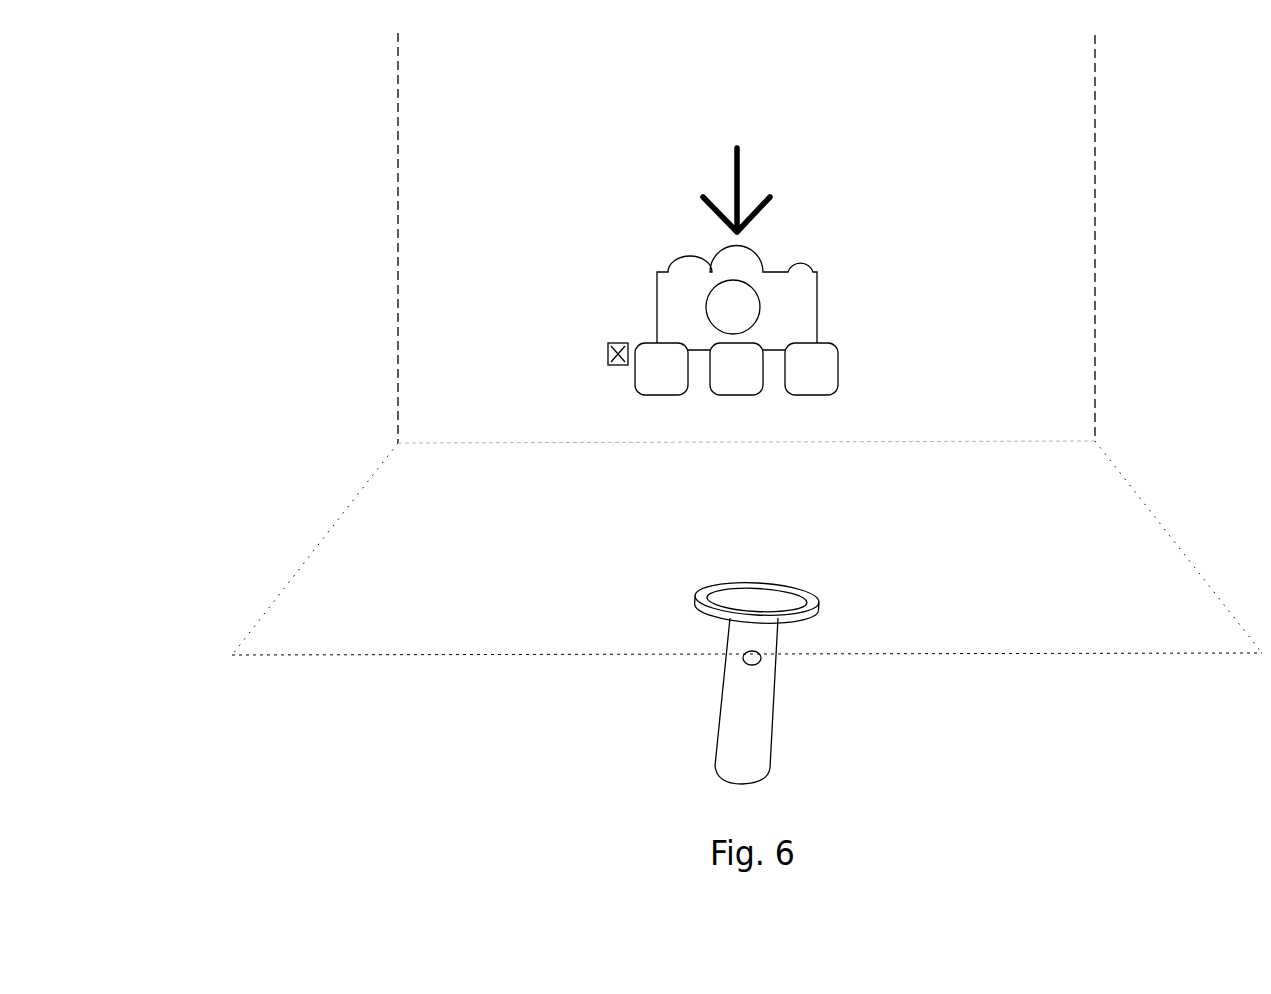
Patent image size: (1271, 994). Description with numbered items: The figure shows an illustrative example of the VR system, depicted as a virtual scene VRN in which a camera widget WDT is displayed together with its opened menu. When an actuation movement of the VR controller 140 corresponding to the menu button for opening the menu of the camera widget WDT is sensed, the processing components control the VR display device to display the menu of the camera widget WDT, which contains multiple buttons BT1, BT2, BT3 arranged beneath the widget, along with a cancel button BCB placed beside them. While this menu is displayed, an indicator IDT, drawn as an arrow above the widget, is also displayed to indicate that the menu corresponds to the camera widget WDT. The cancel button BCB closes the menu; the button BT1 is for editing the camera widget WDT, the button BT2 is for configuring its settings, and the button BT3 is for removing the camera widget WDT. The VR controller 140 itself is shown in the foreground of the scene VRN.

The virtual reality environment VRN is at (322, 120).
The camera widget WDT is at (797, 263).
The indicator IDT is at (740, 160).
The cancel button BCB is at (608, 343).
The button BT1 is at (653, 395).
The button BT2 is at (735, 395).
The button BT3 is at (808, 395).
The VR controller 140 is at (725, 732).